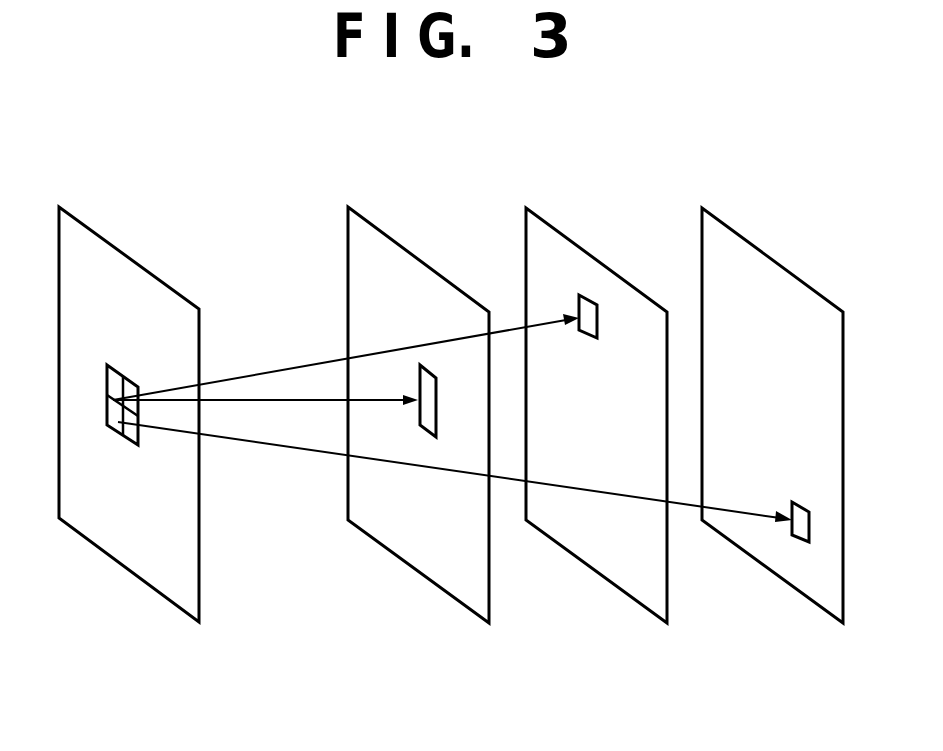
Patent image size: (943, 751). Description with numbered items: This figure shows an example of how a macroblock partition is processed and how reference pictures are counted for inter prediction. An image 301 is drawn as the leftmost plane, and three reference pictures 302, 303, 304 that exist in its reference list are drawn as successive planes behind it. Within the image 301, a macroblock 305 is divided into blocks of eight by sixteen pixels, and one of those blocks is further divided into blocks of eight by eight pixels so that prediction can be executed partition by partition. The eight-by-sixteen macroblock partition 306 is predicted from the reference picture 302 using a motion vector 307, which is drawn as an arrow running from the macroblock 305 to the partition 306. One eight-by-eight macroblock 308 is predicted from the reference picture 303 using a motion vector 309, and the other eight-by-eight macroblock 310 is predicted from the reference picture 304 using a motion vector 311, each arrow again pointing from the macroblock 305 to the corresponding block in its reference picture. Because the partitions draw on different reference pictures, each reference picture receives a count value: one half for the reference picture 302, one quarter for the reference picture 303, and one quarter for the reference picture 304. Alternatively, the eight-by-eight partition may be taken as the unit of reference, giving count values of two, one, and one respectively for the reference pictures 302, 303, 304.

The image 301 is at (82, 222).
The reference picture 302 is at (373, 222).
The reference picture 303 is at (549, 222).
The reference picture 304 is at (723, 222).
The macroblock 305 is at (122, 371).
The 8×16 macroblock partition 306 is at (425, 431).
The motion vector 307 is at (313, 403).
The 8×8 macroblock 308 is at (589, 340).
The motion vector 309 is at (270, 371).
The 8×8 macroblock 310 is at (797, 500).
The motion vector 311 is at (257, 444).